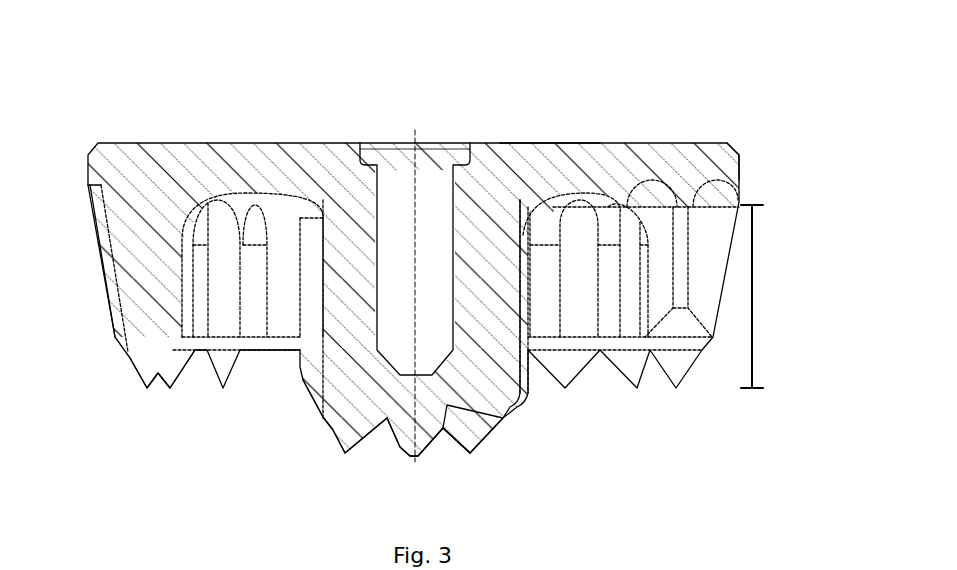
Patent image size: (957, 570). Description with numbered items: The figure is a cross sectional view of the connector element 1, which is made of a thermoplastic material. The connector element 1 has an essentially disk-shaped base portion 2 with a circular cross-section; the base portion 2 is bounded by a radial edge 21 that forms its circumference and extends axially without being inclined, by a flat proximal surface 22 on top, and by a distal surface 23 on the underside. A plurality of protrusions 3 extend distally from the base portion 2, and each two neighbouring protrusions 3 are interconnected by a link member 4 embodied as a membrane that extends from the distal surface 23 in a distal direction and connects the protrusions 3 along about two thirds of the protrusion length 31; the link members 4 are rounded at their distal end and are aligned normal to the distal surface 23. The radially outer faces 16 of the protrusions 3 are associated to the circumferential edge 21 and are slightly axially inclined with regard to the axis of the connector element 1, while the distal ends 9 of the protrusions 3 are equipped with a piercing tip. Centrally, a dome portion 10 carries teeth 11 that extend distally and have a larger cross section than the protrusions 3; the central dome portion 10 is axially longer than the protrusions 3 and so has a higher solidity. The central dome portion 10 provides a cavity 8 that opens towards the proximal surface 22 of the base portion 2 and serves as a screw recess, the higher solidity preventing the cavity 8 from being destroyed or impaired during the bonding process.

The connector element 1 is at (136, 101).
The base portion 2 is at (244, 142).
The protrusion 3 is at (133, 257).
The link member 4 is at (682, 233).
The cavity 8 is at (432, 214).
The distal end 9 is at (140, 367).
The central dome portion 10 is at (533, 412).
The tooth 11 is at (335, 428).
The radially outer face 16 is at (118, 292).
The radial edge 21 is at (739, 174).
The proximal surface 22 is at (543, 143).
The distal surface 23 is at (277, 192).
The protrusion length 31 is at (766, 296).